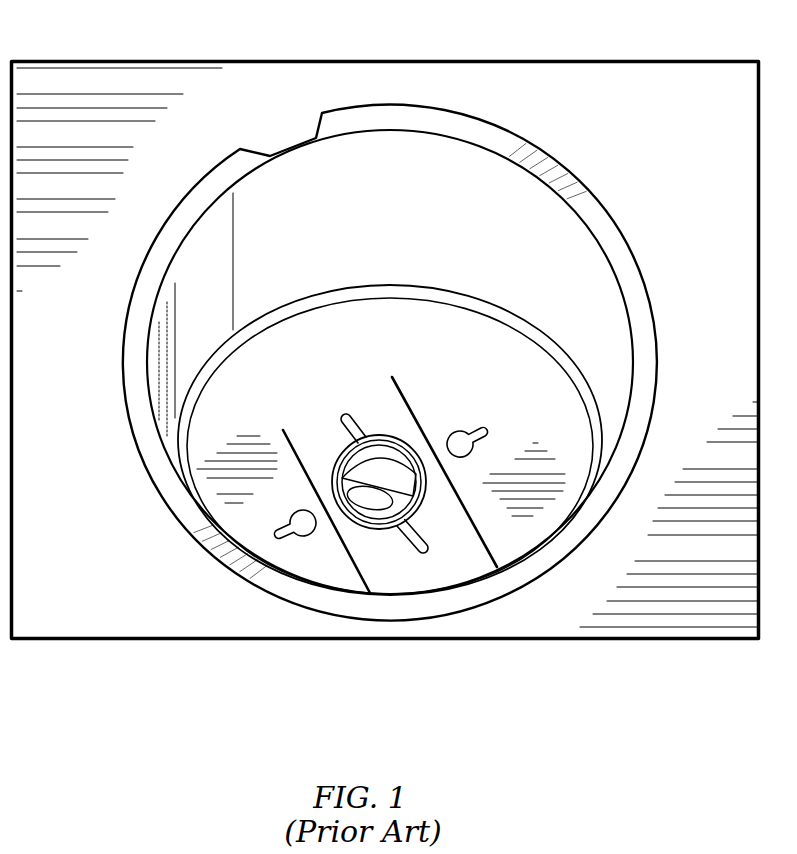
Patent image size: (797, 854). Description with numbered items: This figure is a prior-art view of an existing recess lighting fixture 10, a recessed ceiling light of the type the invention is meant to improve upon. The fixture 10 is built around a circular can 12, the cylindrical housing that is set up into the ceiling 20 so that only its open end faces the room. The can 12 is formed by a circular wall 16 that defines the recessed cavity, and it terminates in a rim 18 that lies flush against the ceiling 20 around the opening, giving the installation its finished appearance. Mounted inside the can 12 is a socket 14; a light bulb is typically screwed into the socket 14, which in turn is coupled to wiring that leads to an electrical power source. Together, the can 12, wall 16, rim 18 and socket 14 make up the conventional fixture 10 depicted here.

The recess lighting fixture 10 is at (385, 355).
The circular can 12 is at (173, 515).
The socket 14 is at (360, 517).
The circular wall 16 is at (304, 195).
The rim 18 is at (533, 568).
The ceiling 20 is at (678, 608).